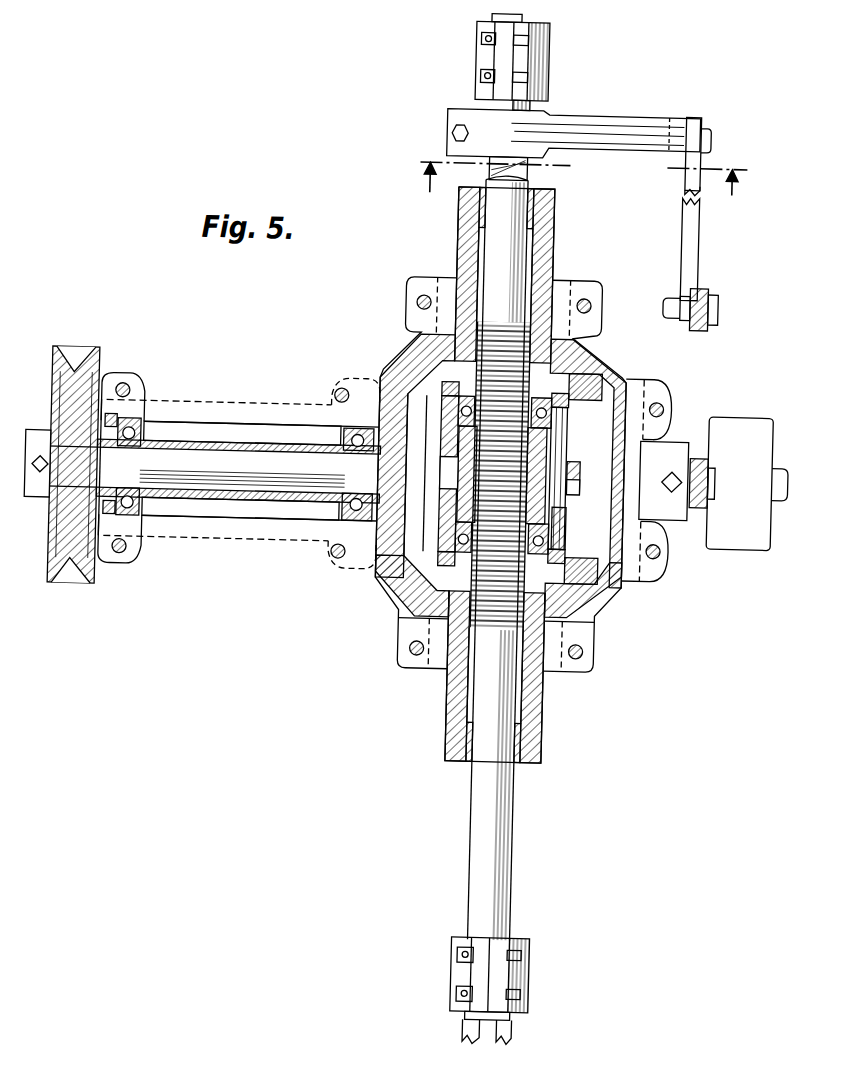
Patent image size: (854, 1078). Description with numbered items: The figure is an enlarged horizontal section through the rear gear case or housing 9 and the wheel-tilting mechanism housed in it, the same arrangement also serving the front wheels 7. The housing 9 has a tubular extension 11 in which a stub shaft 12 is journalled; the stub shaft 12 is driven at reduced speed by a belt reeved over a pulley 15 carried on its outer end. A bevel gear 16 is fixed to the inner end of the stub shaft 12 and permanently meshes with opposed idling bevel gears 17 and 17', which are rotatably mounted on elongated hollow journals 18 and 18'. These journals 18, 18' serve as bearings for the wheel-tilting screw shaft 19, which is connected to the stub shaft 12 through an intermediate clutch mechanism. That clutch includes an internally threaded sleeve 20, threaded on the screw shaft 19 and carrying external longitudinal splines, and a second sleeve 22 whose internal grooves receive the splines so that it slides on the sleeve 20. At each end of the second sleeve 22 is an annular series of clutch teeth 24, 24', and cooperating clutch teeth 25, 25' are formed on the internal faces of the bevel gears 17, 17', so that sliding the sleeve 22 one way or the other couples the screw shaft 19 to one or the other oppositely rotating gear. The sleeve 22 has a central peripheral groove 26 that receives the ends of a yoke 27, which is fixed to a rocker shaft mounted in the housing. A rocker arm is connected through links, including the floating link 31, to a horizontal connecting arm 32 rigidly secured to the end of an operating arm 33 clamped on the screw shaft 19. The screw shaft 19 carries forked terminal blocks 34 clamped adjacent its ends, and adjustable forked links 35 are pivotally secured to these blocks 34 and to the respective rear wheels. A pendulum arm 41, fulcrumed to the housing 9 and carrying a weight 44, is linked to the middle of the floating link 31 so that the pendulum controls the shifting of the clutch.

The front wheels 7 is at (583, 193).
The rear gear case or housing 9 is at (380, 347).
The tubular extension 11 is at (236, 405).
The stub shaft 12 is at (191, 488).
The pulley 15 is at (95, 582).
The bevel gear 16 is at (380, 568).
The idling bevel gear 17 is at (607, 443).
The idling bevel gear 17' is at (612, 592).
The elongated hollow journal 18 is at (478, 275).
The elongated hollow journal 18' is at (520, 678).
The wheel-tilting screw shaft 19 is at (515, 790).
The internally threaded sleeve 20 is at (543, 451).
The second sleeve 22 is at (564, 524).
The clutch teeth 24 is at (537, 416).
The clutch teeth 24' is at (529, 538).
The cooperating clutch teeth 25 is at (529, 399).
The cooperating clutch teeth 25' is at (523, 554).
The central peripheral groove 26 is at (578, 465).
The yoke 27 is at (421, 472).
The link 31 is at (698, 286).
The horizontal connecting arm 32 is at (679, 228).
The operating arm 33 is at (591, 121).
The forked terminal block 34 is at (538, 66).
The adjustable forked link 35 is at (524, 1029).
The pendulum arm 41 is at (703, 452).
The weight 44 is at (748, 424).